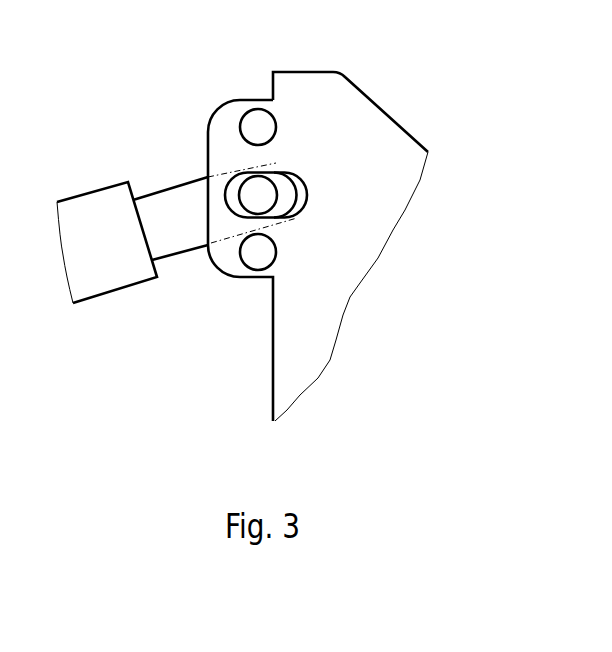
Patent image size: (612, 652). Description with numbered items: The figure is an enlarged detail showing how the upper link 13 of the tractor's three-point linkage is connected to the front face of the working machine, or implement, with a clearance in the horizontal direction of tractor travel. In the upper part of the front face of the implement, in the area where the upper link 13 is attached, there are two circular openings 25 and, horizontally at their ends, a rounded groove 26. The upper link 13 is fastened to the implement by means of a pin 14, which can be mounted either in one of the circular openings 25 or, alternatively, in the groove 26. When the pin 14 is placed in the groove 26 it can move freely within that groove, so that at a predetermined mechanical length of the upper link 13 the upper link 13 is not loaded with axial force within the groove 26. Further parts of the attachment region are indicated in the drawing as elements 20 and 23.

The upper link 13 is at (80, 173).
The pin 14 is at (253, 190).
The bracket 20 is at (282, 357).
The mounting surface 23 is at (282, 233).
The circular opening 25 is at (253, 127).
The rounded groove 26 is at (233, 203).